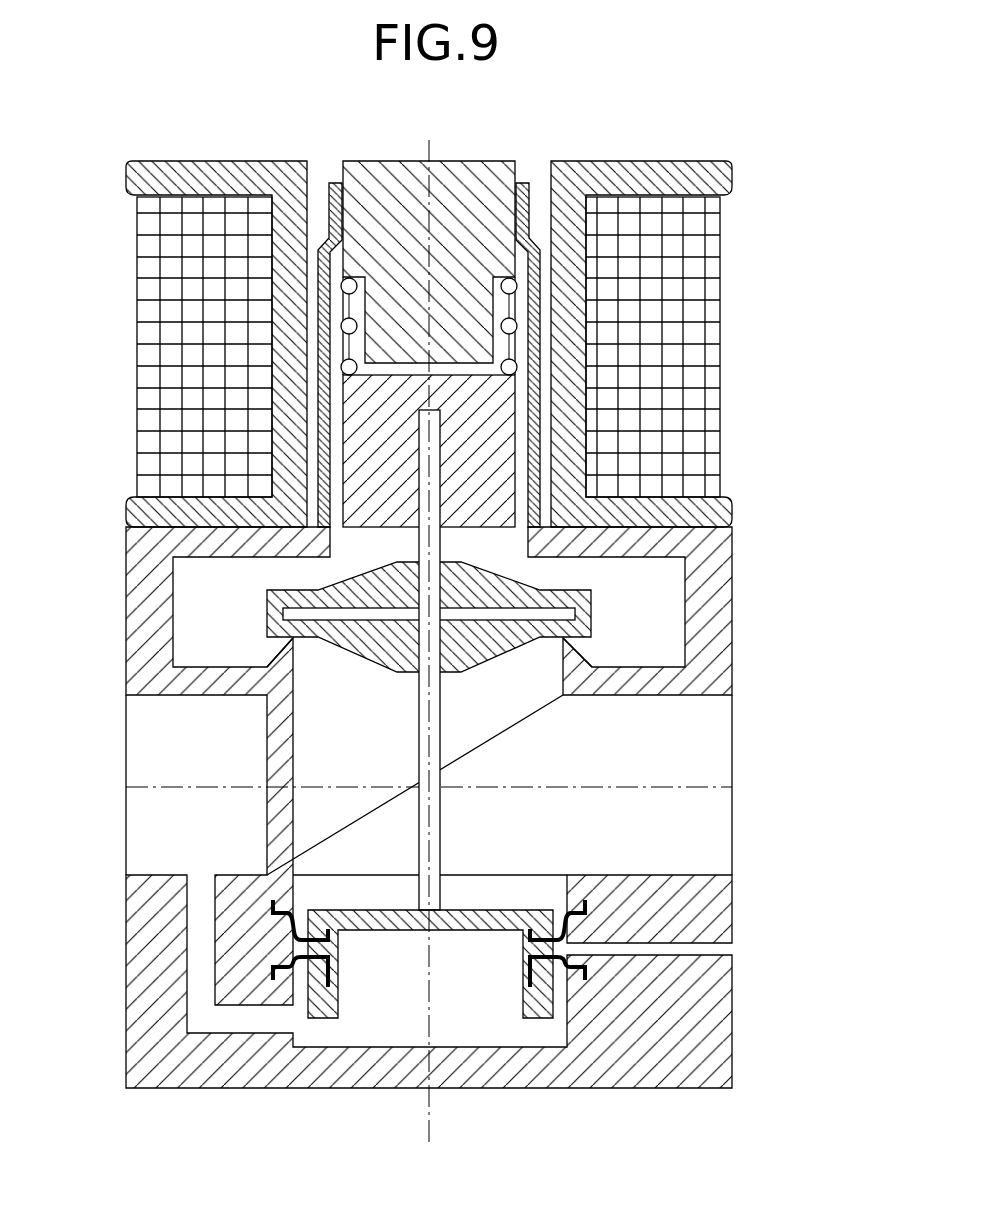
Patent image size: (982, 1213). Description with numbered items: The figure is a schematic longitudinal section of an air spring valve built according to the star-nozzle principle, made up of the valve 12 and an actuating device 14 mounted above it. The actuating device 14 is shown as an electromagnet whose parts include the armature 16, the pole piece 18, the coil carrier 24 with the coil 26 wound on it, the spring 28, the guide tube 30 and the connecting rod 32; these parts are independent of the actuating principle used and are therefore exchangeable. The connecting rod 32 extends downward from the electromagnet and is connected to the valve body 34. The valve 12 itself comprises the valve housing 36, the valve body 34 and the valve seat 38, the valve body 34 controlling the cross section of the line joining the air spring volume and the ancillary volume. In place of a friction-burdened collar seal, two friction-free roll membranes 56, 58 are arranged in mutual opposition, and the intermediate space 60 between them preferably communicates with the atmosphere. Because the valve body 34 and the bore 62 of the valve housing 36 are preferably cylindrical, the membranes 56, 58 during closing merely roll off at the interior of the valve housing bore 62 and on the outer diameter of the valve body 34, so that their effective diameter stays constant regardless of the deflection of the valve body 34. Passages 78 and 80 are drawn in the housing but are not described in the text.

The valve 12 is at (798, 845).
The actuating device 14 is at (732, 333).
The armature 16 is at (377, 473).
The pole piece 18 is at (457, 163).
The coil carrier 24 is at (637, 161).
The coil 26 is at (170, 293).
The spring 28 is at (340, 330).
The guide tube 30 is at (533, 295).
The connecting rod 32 is at (440, 458).
The valve body 34 is at (530, 597).
The valve housing 36 is at (708, 1027).
The valve seat 38 is at (573, 667).
The roll membrane 56 is at (290, 926).
The roll membrane 58 is at (297, 955).
The intermediate space 60 is at (558, 948).
The valve housing bore 62 is at (640, 948).
The port 78 is at (157, 850).
The port 80 is at (692, 752).